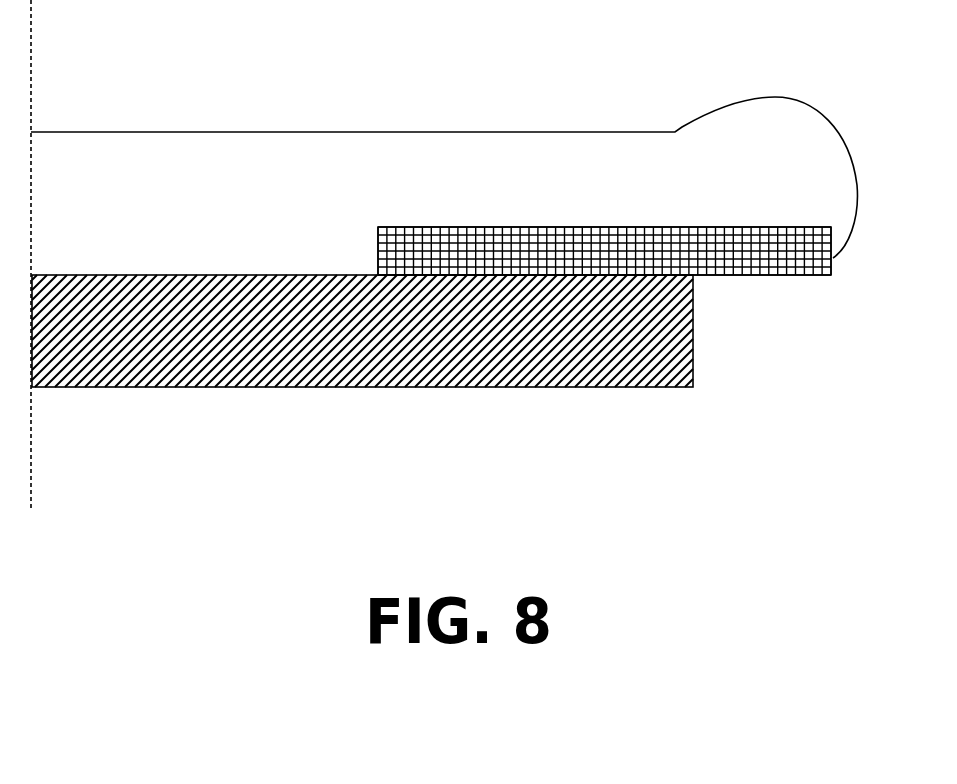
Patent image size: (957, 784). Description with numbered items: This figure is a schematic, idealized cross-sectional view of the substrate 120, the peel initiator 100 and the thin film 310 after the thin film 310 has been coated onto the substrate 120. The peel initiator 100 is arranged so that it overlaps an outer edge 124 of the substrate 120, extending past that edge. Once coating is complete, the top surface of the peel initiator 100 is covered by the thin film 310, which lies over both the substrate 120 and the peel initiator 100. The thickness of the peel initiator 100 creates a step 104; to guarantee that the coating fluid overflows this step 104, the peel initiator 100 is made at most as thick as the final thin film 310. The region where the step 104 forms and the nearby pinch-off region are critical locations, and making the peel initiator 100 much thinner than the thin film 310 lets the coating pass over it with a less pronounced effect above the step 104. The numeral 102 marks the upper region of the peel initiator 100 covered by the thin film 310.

The thin film 310 is at (463, 132).
The peel initiator 100 is at (762, 277).
The top surface of mesh 102 is at (693, 227).
The step 104 is at (377, 258).
The substrate 120 is at (448, 387).
The outer edge 124 is at (695, 355).